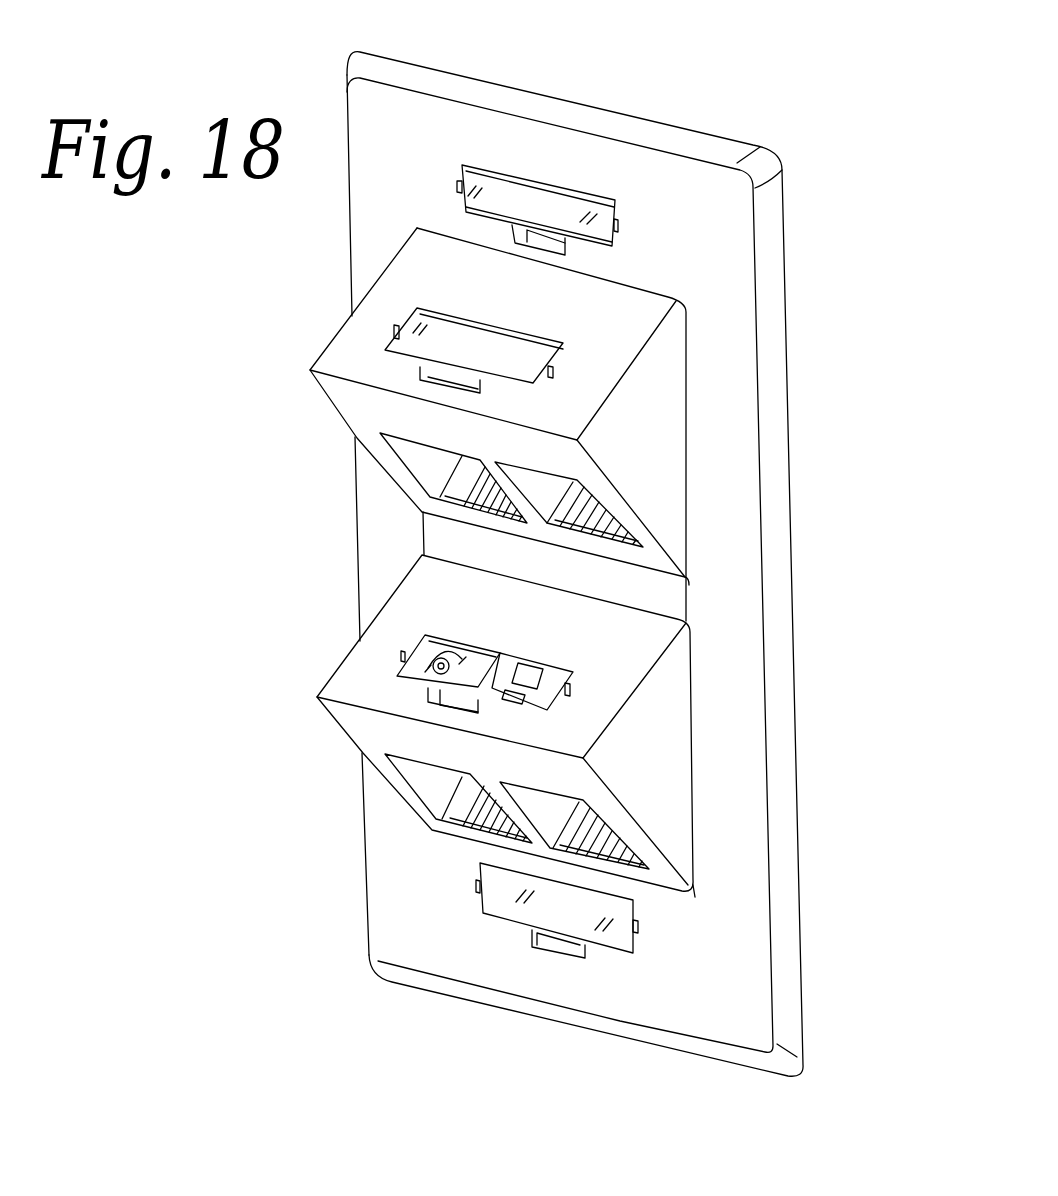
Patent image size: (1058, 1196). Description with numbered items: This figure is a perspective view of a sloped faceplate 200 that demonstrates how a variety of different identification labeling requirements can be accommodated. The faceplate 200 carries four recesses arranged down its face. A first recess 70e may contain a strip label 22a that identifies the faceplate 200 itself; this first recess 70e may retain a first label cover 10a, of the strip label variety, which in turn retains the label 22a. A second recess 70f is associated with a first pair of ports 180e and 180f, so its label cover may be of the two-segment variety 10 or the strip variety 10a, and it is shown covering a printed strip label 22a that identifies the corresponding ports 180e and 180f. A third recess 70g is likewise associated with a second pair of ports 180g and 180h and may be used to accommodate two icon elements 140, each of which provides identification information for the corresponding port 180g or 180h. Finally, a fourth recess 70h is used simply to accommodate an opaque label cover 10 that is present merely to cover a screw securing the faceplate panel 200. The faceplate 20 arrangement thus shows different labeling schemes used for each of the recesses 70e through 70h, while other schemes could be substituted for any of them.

The label cover 10 is at (613, 243).
The strip-variety label cover 10a is at (387, 370).
The faceplate 20 is at (485, 190).
The strip label 22a is at (497, 173).
The first recess 70e is at (593, 193).
The second recess 70f is at (410, 320).
The third recess 70g is at (410, 640).
The fourth recess 70h is at (483, 903).
The icon element 140 is at (552, 627).
The port 180e is at (425, 457).
The port 180f is at (536, 487).
The port 180g is at (431, 775).
The port 180h is at (546, 808).
The sloped faceplate 200 is at (554, 562).